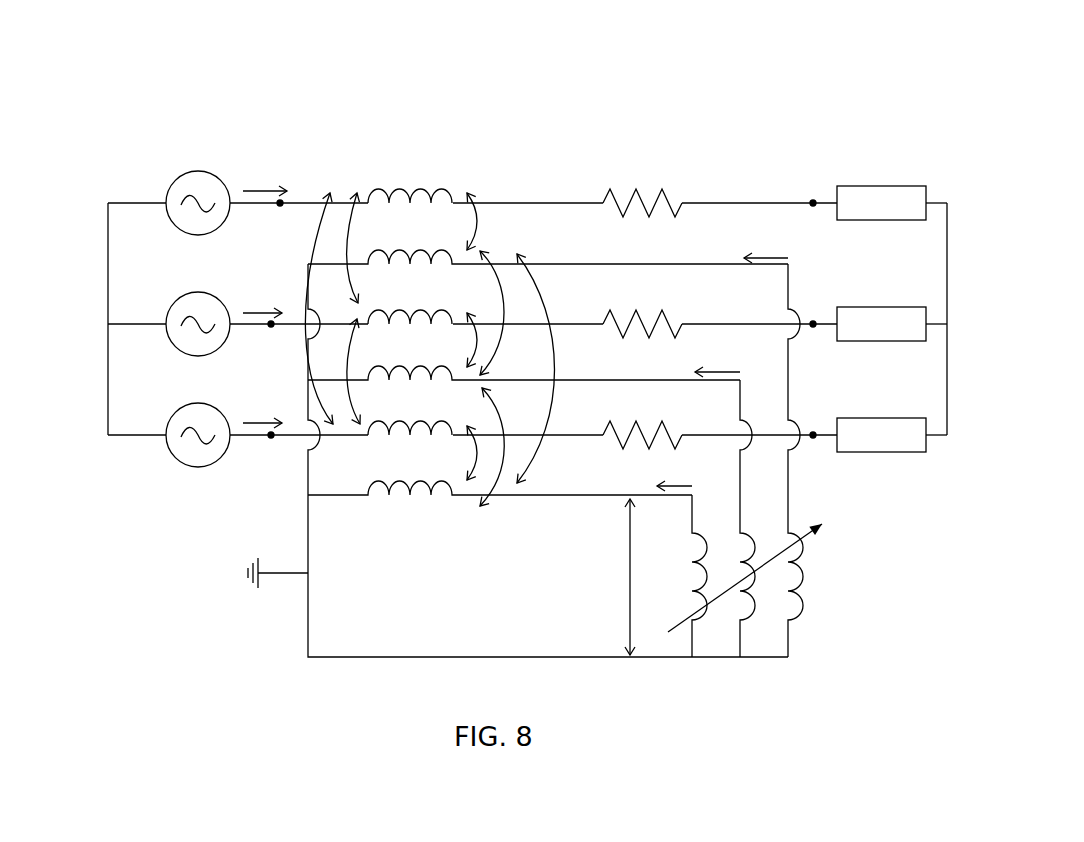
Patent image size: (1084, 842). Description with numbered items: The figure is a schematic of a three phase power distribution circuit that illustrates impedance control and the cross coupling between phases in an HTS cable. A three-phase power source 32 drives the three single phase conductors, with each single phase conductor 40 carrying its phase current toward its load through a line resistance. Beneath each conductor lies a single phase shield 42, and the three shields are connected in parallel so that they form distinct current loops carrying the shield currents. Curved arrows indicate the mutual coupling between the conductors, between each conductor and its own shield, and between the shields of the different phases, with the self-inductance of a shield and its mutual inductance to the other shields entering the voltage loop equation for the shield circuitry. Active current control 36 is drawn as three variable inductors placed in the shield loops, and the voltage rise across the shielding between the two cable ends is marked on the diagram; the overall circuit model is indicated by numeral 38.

The 3-phase power source 32 is at (108, 268).
The active current control 36 is at (814, 596).
The circuit model 38 is at (537, 127).
The single phase conductor 40 is at (308, 201).
The single phase shield 42 is at (705, 262).